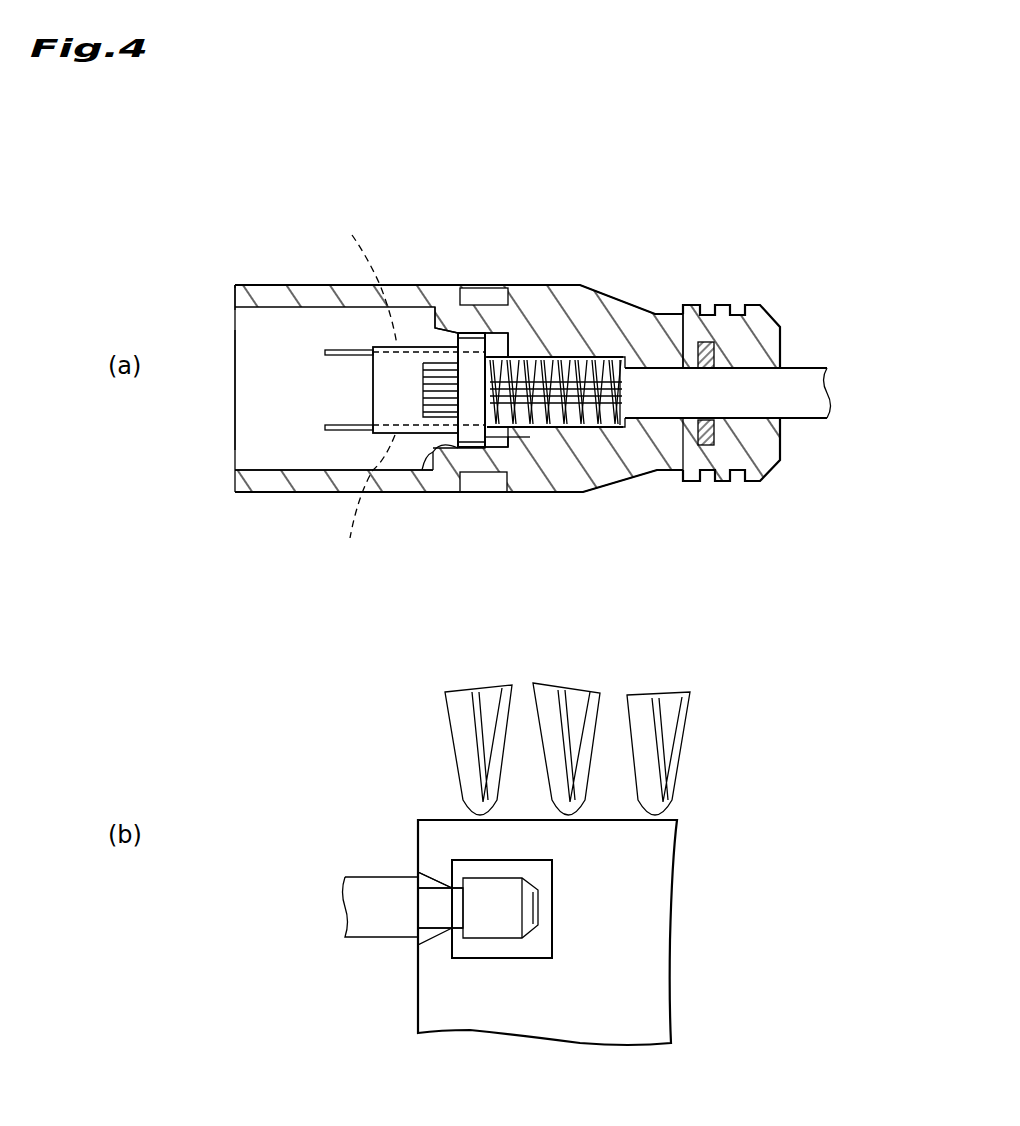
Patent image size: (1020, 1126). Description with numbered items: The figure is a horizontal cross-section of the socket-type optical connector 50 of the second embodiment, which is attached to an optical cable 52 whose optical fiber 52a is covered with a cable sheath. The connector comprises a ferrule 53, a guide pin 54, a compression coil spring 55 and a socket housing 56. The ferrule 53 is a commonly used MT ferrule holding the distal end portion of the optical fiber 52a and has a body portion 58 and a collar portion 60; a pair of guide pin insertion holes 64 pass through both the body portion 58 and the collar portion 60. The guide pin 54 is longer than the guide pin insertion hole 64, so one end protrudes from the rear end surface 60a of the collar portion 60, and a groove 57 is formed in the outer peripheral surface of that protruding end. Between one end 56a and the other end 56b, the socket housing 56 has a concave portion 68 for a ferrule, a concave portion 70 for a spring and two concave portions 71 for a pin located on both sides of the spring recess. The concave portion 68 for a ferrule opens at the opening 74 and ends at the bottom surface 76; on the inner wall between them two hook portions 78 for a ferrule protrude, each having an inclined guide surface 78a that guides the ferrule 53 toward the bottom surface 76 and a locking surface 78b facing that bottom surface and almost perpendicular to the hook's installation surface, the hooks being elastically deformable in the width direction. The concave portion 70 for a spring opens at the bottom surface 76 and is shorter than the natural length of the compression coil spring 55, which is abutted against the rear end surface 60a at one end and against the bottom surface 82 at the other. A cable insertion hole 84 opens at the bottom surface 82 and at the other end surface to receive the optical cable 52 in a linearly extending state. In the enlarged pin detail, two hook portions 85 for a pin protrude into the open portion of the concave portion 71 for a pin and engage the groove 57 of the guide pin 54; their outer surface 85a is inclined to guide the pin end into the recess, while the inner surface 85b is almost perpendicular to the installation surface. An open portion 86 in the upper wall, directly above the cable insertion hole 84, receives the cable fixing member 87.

The socket-type optical connector 50 is at (578, 186).
The optical cable 52 is at (820, 398).
The optical fiber 52a is at (622, 427).
The ferrule 53 is at (403, 330).
The guide pin 54 is at (327, 352).
The compression coil spring 55 is at (583, 357).
The socket housing 56 is at (307, 283).
The one end of socket housing 56a is at (230, 290).
The other end of socket housing 56b is at (783, 340).
The groove 57 is at (428, 902).
The body portion 58 is at (390, 394).
The collar portion 60 is at (478, 332).
The rear end surface 60a is at (498, 333).
The guide pin insertion hole 64 is at (363, 394).
The concave portion for a ferrule 68 is at (310, 453).
The concave portion for a spring 70 is at (573, 427).
The concave portion for a pin 71 is at (527, 438).
The opening 74 is at (232, 407).
The bottom surface 76 is at (513, 440).
The hook portion for a ferrule 78 is at (460, 330).
The guide surface 78a is at (428, 445).
The locking surface 78b is at (473, 452).
The bottom surface of concave portion for a spring 82 is at (640, 347).
The cable insertion hole 84 is at (675, 355).
The hook portion for a pin 85 is at (433, 868).
The inclined surface 85a is at (410, 873).
The inner surface 85b is at (488, 852).
The open portion 86 is at (705, 342).
The cable fixing member 87 is at (712, 447).